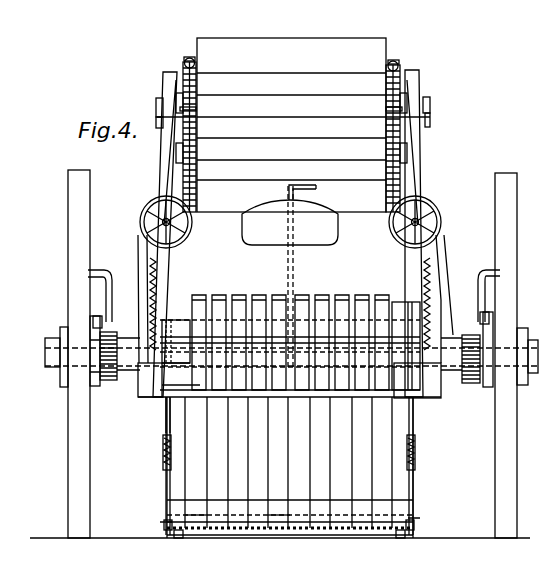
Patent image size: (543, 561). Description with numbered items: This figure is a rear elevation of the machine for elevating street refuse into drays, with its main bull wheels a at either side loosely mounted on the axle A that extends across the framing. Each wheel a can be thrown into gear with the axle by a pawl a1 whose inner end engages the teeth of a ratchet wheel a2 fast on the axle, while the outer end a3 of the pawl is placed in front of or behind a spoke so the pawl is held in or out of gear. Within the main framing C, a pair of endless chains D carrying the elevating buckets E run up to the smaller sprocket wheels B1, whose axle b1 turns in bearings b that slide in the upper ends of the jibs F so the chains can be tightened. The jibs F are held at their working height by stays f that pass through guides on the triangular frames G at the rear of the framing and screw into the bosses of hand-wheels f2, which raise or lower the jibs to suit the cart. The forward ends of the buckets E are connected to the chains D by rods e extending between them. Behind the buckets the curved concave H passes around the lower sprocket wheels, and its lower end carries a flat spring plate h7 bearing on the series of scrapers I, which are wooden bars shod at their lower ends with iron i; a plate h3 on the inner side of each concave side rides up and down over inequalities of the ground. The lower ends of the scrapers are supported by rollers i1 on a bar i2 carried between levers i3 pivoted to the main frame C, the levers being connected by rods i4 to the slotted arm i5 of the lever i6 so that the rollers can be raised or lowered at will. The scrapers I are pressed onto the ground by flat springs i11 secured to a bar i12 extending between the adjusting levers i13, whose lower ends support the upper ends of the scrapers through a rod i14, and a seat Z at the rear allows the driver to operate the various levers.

The main bull wheel a is at (288, 354).
The axle A is at (48, 344).
The pawl a1 is at (100, 326).
The ratchet wheel a2 is at (471, 392).
The outer end of pawl a3 is at (480, 274).
The small sprocket wheel B1 is at (430, 60).
The endless chain D is at (197, 166).
The rod or bar e is at (196, 90).
The adjusting lever i13 is at (197, 111).
The bearing b is at (156, 104).
The axle of small sprocket wheels b1 is at (444, 117).
The elevating bucket E is at (291, 125).
The jib F is at (162, 160).
The stay f is at (148, 219).
The hand-wheel f2 is at (448, 190).
The triangular frame G is at (138, 246).
The main framing C is at (155, 393).
The seat Z is at (290, 278).
The lever i6 is at (318, 188).
The concave H is at (448, 494).
The iron or steel shoe i is at (290, 409).
The flat spring i11 is at (346, 292).
The bar i12 is at (319, 296).
The slotted arm i5 is at (166, 327).
The bar or rod i14 is at (165, 400).
The rod i4 is at (429, 423).
The lever i3 is at (427, 492).
The bar i2 is at (434, 527).
The roller i1 is at (200, 530).
The flat spring plate h7 is at (426, 514).
The plate h3 is at (425, 548).
The scraper I is at (288, 462).